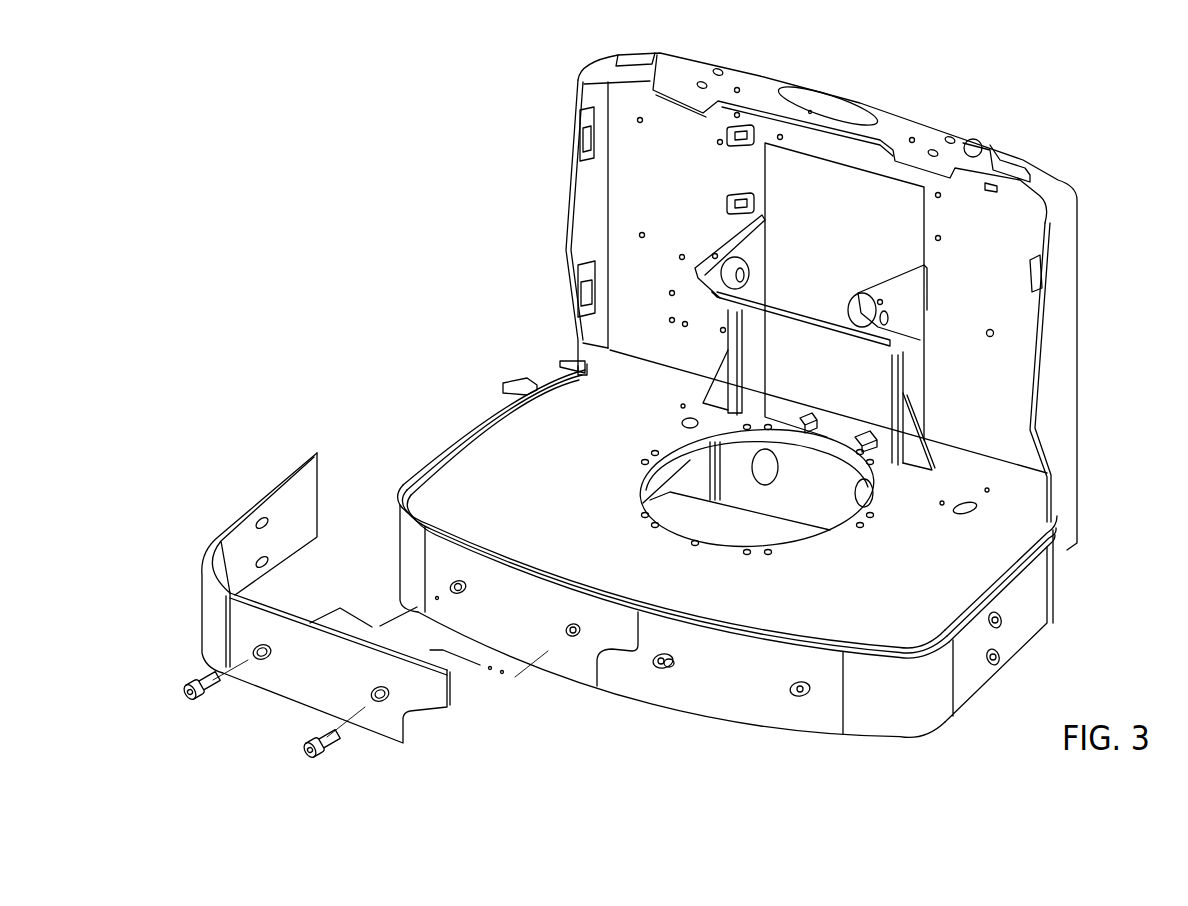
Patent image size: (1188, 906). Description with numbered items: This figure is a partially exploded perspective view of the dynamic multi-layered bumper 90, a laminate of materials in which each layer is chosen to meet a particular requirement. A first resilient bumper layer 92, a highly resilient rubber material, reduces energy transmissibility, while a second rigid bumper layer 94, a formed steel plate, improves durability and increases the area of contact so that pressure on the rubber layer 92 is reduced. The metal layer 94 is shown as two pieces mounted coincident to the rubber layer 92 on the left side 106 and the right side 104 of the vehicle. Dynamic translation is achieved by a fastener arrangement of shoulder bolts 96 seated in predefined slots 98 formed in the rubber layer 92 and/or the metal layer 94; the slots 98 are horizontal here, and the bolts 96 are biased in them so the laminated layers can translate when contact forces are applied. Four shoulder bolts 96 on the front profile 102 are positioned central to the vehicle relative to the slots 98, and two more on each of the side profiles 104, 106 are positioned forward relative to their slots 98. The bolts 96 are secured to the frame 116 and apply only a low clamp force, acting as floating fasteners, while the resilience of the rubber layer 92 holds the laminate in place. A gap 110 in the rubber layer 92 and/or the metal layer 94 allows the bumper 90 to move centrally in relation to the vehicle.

The dynamic multi-layered bumper 90 is at (693, 417).
The first resilient bumper layer 92 is at (530, 620).
The second rigid bumper layer 94 is at (295, 685).
The shoulder bolt 96 is at (299, 749).
The predefined slot 98 is at (372, 703).
The front profile 102 is at (750, 703).
The right side profile 104 is at (1028, 633).
The left side profile 106 is at (460, 433).
The gap 110 is at (637, 615).
The frame 116 is at (993, 580).